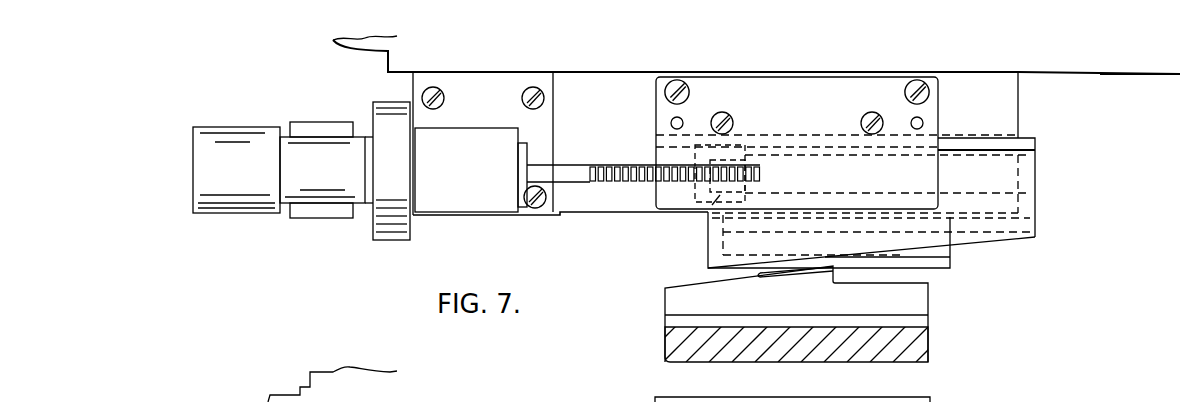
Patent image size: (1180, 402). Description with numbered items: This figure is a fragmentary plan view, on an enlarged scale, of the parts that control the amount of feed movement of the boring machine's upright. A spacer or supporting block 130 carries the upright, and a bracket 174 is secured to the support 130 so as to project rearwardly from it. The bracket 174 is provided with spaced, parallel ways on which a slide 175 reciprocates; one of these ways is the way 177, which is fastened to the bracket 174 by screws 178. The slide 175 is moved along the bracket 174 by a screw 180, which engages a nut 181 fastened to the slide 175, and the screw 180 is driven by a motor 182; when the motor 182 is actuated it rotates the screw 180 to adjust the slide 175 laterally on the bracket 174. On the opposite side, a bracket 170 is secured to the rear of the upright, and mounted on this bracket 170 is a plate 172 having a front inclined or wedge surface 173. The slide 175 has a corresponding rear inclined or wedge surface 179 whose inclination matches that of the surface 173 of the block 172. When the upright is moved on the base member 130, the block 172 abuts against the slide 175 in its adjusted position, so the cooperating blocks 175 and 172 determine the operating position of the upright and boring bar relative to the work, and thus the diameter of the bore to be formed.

The spacer or supporting block 130 is at (1137, 70).
The bracket 170 is at (680, 343).
The plate 172 is at (678, 304).
The front inclined or wedge surface 173 is at (760, 273).
The bracket 174 is at (1012, 122).
The slide 175 is at (1027, 183).
The way 177 is at (932, 130).
The screws 178 is at (907, 93).
The rear inclined or wedge surface 179 is at (977, 243).
The screw 180 is at (638, 183).
The nut 181 is at (703, 212).
The motor 182 is at (252, 213).